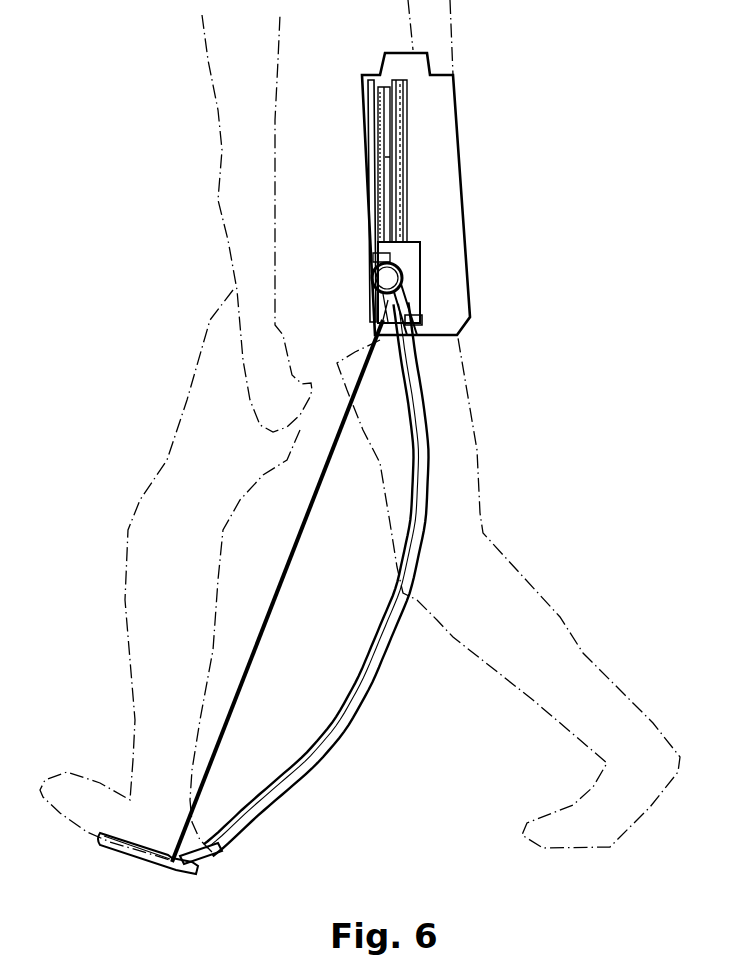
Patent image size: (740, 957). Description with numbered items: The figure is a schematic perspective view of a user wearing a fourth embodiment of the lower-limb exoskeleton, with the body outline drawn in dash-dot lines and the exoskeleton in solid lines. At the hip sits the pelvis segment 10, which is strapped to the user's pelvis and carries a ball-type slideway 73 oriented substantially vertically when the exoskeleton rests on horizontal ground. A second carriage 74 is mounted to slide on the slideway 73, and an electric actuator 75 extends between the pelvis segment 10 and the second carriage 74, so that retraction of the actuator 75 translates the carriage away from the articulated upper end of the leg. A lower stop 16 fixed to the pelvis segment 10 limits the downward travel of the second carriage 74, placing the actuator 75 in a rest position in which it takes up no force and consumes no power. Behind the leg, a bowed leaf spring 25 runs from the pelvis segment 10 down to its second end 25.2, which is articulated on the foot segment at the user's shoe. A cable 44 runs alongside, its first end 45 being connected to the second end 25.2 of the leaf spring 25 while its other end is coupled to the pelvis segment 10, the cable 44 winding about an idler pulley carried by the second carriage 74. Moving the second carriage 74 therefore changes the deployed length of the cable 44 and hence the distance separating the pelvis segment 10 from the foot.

The pelvis segment 10 is at (437, 158).
The lower stop 16 is at (423, 323).
The ball-type slideway 73 is at (373, 107).
The electric actuator 75 is at (372, 196).
The second carriage 74 is at (373, 260).
The cable 44 is at (282, 585).
The leaf spring 25 is at (340, 728).
The first end of the cable 45 is at (218, 848).
The second end of the leaf spring 25.2 is at (210, 865).